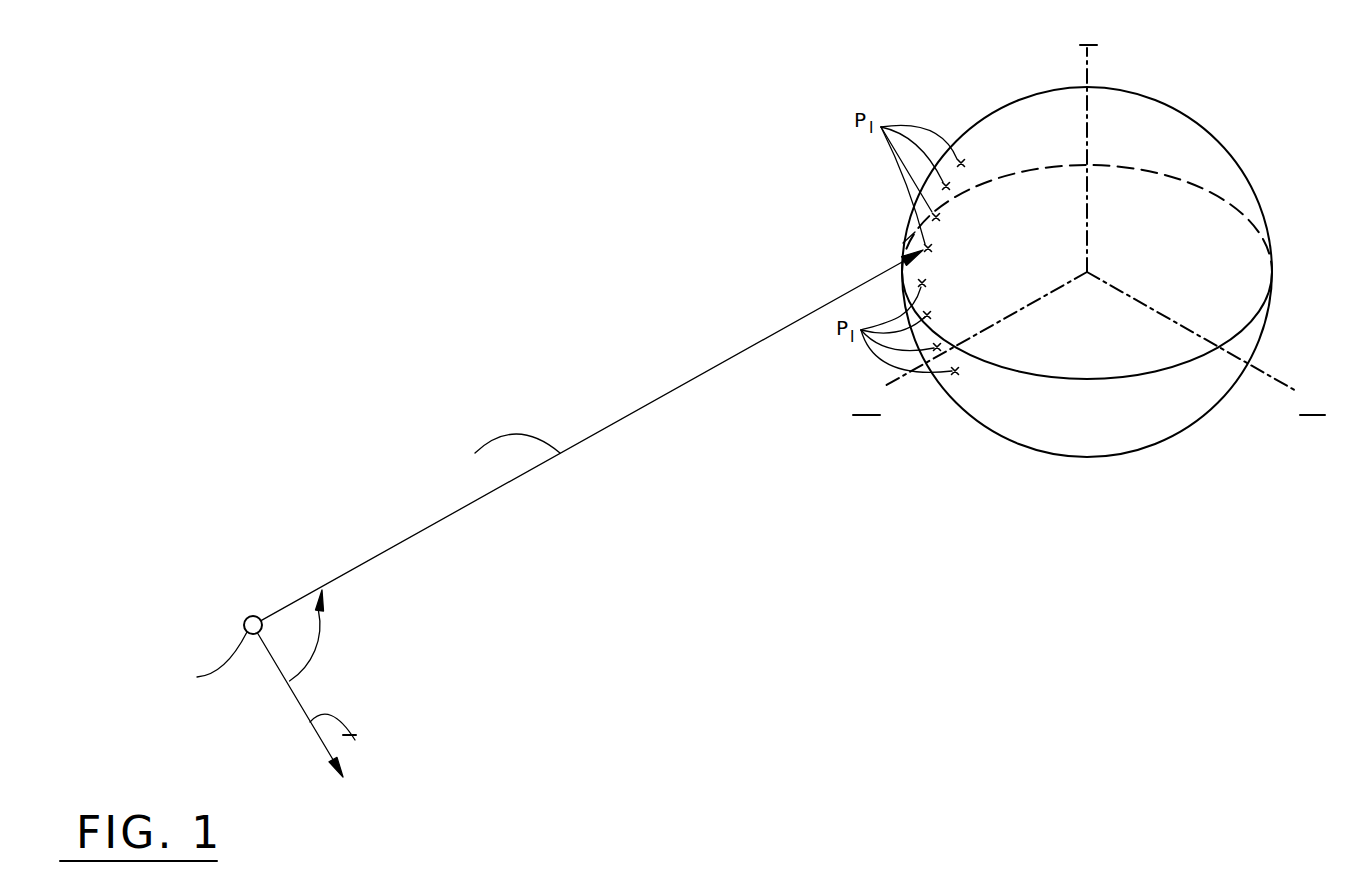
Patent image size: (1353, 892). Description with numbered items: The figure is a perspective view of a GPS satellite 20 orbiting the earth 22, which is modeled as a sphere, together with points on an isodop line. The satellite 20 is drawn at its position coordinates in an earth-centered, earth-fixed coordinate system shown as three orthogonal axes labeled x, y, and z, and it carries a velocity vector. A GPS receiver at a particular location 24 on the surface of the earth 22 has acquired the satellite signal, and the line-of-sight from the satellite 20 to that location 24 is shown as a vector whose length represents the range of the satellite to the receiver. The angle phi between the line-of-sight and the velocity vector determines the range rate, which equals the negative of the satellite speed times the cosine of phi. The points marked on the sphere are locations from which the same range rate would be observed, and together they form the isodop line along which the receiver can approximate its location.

The GPS satellite 20 is at (255, 615).
The earth 22 is at (1152, 120).
The particular location 24 is at (915, 243).